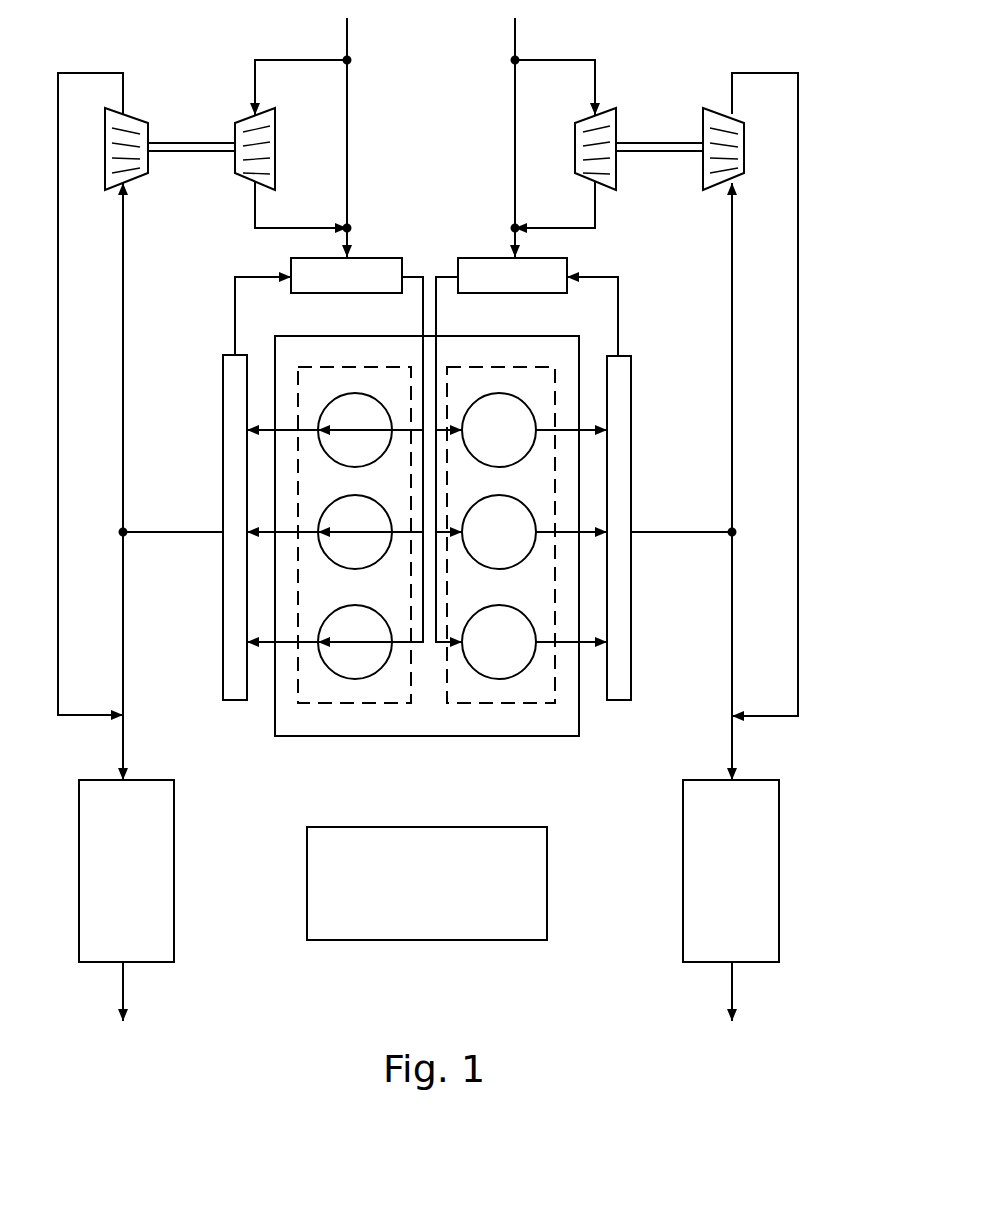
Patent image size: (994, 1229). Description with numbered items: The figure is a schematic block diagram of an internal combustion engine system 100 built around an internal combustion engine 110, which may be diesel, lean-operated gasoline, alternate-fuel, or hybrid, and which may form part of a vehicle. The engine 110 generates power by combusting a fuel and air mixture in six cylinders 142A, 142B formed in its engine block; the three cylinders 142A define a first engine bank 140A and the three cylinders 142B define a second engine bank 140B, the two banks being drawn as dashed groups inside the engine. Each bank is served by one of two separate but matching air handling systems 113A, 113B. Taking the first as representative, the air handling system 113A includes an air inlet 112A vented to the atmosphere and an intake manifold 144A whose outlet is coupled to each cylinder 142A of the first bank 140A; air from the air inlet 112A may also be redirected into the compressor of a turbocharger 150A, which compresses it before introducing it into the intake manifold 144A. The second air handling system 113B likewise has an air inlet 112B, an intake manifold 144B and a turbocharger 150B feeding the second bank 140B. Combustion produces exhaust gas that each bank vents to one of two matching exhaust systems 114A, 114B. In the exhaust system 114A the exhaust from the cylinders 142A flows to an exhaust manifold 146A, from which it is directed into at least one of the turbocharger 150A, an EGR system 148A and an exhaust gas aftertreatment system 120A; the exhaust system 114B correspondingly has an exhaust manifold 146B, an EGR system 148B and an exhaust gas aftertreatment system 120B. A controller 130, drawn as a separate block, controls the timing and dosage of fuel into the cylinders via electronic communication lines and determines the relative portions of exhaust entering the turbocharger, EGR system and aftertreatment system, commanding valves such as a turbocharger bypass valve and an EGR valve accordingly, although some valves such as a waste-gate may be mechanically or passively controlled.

The internal combustion engine system 100 is at (637, 40).
The internal combustion engine 110 is at (547, 737).
The air inlet 112A is at (343, 245).
The air inlet 112B is at (518, 243).
The air handling system 113A is at (388, 131).
The air handling system 113B is at (472, 131).
The exhaust system 114A is at (183, 717).
The exhaust system 114B is at (667, 720).
The exhaust gas aftertreatment system 120A is at (104, 880).
The exhaust gas aftertreatment system 120B is at (708, 880).
The controller 130 is at (411, 907).
The engine bank 140A is at (337, 705).
The engine bank 140B is at (480, 705).
The cylinders 142A is at (333, 440).
The cylinders 142B is at (477, 440).
The intake manifold 144A is at (324, 287).
The intake manifold 144B is at (490, 287).
The exhaust manifold 146A is at (223, 442).
The exhaust manifold 146B is at (632, 440).
The EGR system 148A is at (235, 322).
The EGR system 148B is at (618, 322).
The turbocharger 150A is at (158, 103).
The turbocharger 150B is at (643, 103).